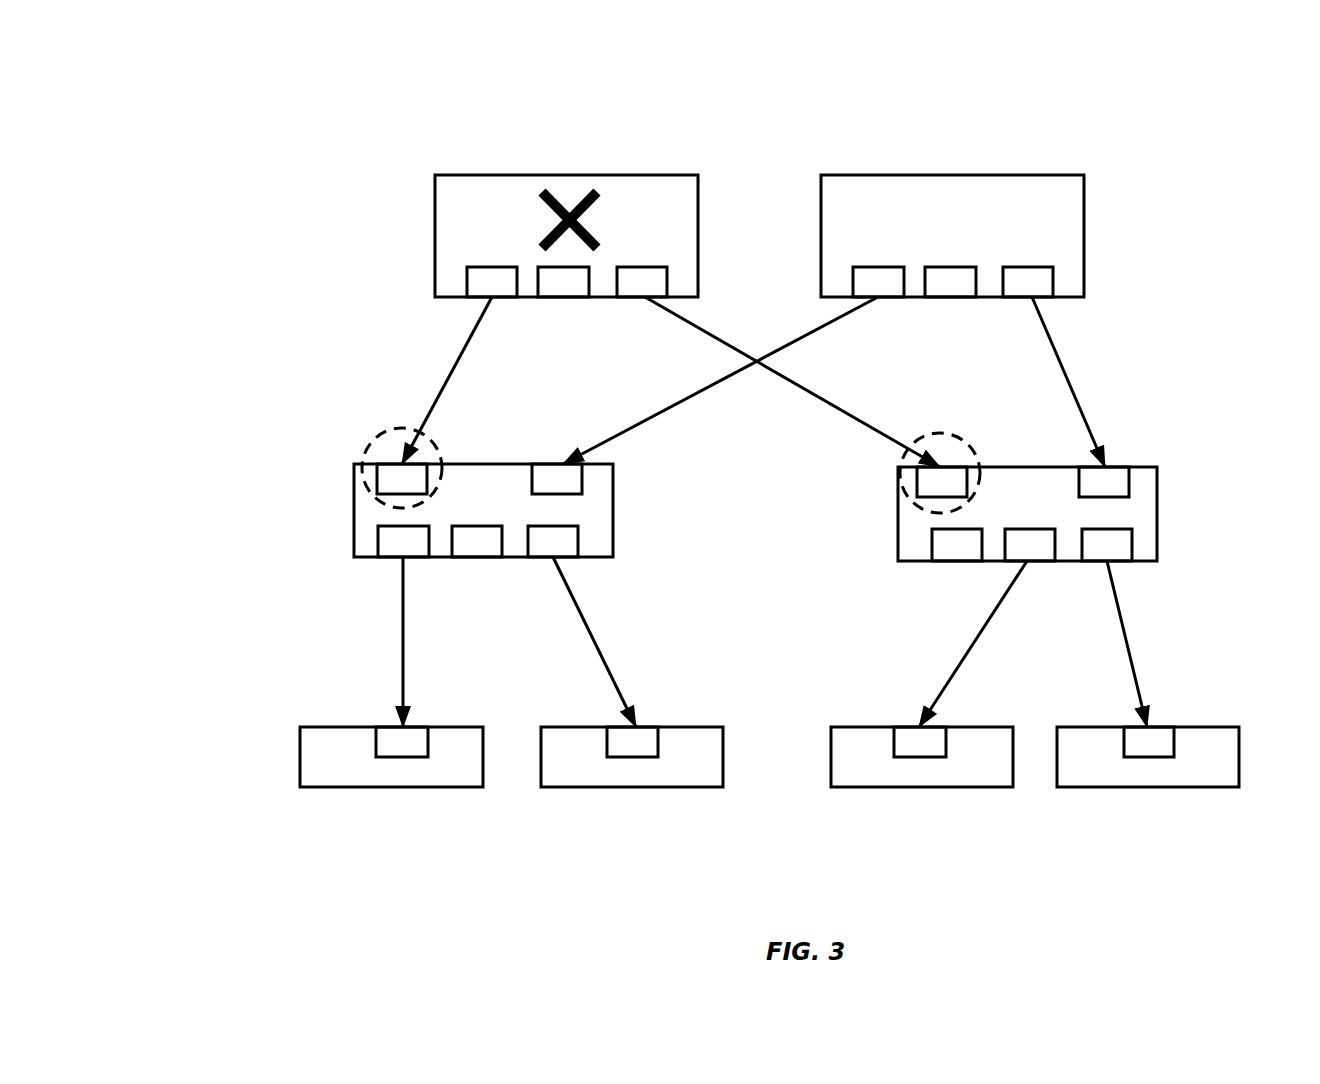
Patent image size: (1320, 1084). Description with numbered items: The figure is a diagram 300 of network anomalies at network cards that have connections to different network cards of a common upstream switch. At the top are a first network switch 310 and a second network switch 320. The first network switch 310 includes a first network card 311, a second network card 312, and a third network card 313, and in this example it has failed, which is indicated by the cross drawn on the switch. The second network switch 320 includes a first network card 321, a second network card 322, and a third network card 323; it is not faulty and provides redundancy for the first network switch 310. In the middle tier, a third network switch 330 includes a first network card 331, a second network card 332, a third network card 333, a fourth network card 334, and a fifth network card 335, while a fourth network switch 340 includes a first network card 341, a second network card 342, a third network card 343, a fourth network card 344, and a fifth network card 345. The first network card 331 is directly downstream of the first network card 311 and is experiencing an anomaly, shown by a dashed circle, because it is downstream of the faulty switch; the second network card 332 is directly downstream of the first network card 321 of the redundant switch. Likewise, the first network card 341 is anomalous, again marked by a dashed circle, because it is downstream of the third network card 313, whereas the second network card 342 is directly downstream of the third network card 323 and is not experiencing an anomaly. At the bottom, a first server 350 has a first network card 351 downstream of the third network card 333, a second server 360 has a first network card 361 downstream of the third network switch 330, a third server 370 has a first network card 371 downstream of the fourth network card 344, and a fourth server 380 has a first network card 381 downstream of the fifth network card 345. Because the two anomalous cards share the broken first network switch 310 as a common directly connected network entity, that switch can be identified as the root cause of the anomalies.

The diagram 300 is at (250, 80).
The first network switch 310 is at (545, 175).
The first network card 311 is at (478, 292).
The second network card 312 is at (549, 292).
The third network card 313 is at (628, 292).
The second network switch 320 is at (931, 175).
The first network card 321 is at (864, 292).
The second network card 322 is at (936, 292).
The third network card 323 is at (1014, 292).
The third network switch 330 is at (468, 464).
The first network card 331 is at (388, 489).
The second network card 332 is at (543, 489).
The third network card 333 is at (389, 552).
The fourth network card 334 is at (463, 552).
The fifth network card 335 is at (539, 552).
The fourth network switch 340 is at (1062, 467).
The first network card 341 is at (928, 492).
The second network card 342 is at (1090, 492).
The third network card 343 is at (943, 555).
The fourth network card 344 is at (1016, 555).
The fifth network card 345 is at (1093, 555).
The first server 350 is at (345, 727).
The first network card 351 is at (388, 752).
The second server 360 is at (583, 727).
The first network card 361 is at (618, 752).
The third server 370 is at (873, 727).
The first network card 371 is at (906, 752).
The fourth server 380 is at (1108, 727).
The first network card 381 is at (1135, 752).